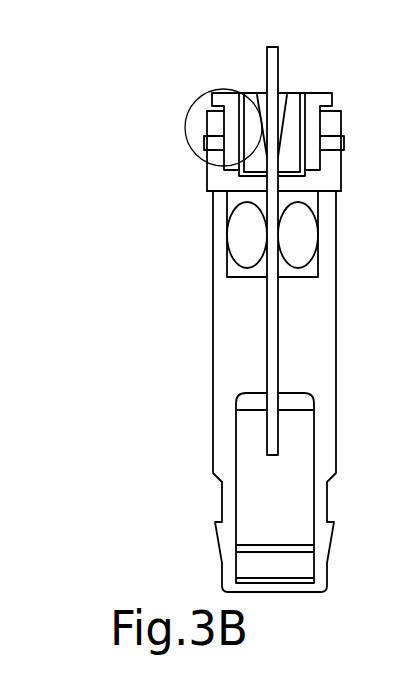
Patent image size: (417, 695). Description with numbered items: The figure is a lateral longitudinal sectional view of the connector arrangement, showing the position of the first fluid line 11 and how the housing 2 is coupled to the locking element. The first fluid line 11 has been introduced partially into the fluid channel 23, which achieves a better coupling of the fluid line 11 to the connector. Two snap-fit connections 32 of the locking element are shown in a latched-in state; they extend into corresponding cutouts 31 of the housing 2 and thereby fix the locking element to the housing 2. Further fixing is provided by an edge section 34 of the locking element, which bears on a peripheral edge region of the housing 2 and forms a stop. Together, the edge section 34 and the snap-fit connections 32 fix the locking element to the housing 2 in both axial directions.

The housing 2 is at (213, 400).
The first fluid line 11 is at (265, 47).
The fluid channel 23 is at (254, 375).
The cutouts 31 is at (290, 188).
The snap-fit connections 32 is at (181, 165).
The edge section 34 is at (332, 99).